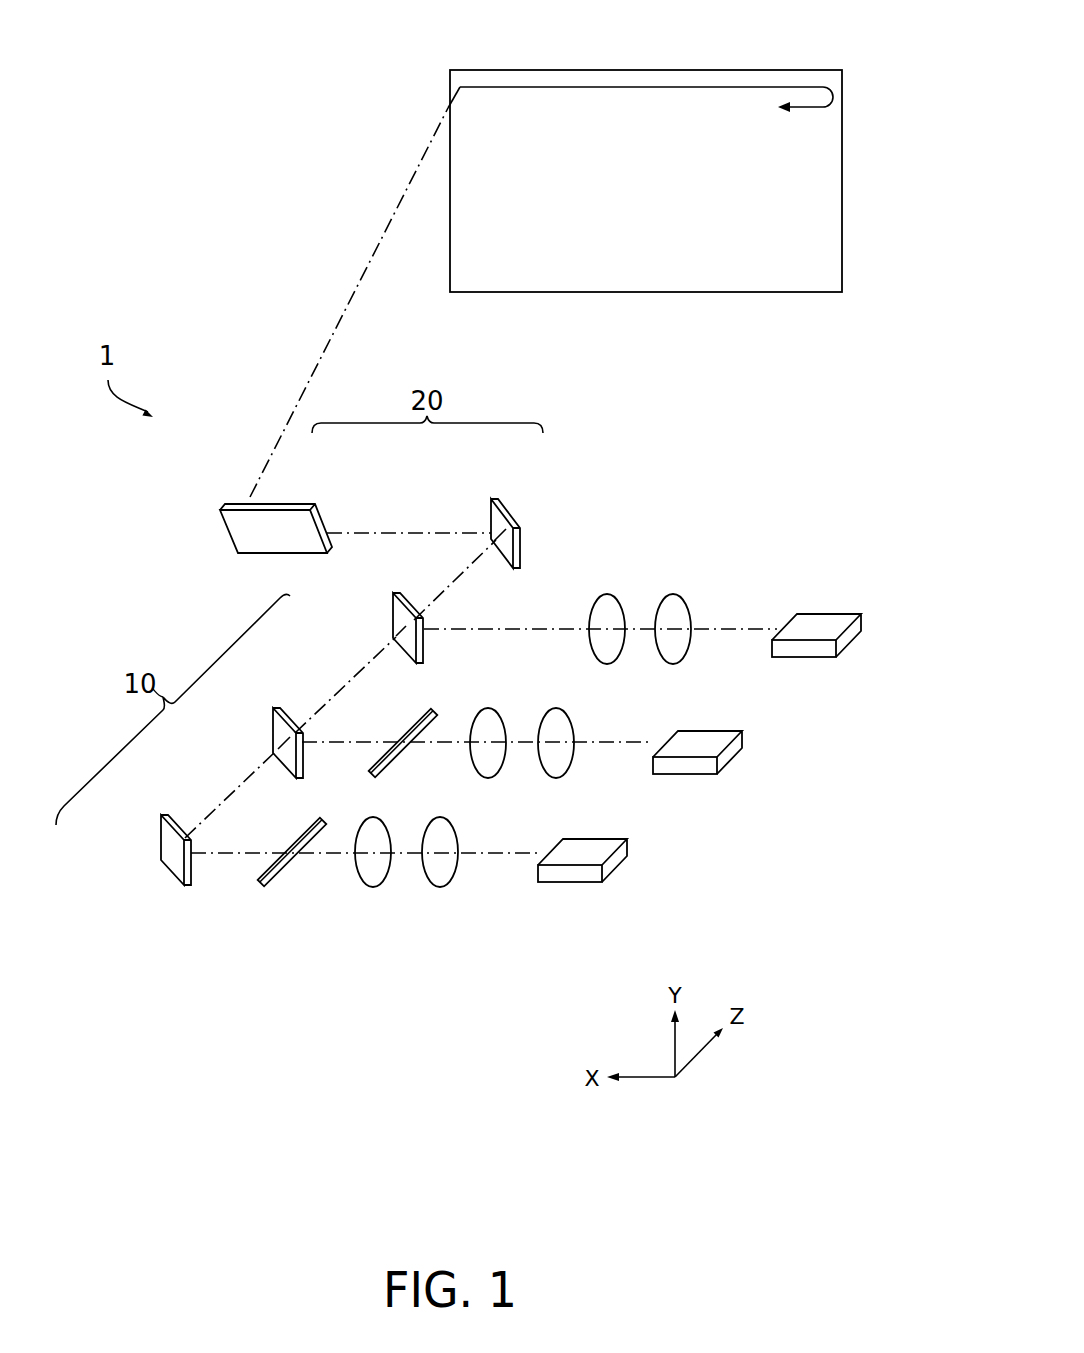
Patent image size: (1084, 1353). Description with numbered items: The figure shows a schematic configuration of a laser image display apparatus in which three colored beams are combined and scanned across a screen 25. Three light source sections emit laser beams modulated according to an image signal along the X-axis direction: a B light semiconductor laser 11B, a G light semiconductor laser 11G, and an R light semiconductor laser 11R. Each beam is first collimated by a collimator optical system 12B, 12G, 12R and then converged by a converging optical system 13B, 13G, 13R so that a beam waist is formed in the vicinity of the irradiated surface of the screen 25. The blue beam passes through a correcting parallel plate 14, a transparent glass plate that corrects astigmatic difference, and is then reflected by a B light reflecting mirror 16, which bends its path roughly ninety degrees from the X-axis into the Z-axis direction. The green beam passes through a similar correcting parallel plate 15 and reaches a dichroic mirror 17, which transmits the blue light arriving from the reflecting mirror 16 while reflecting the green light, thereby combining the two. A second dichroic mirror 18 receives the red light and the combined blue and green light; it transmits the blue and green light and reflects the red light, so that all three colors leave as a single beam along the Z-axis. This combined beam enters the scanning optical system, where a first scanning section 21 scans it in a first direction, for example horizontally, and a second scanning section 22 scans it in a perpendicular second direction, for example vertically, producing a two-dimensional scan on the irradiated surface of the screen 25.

The R light semiconductor laser 11R is at (822, 618).
The G light semiconductor laser 11G is at (708, 737).
The B light semiconductor laser 11B is at (595, 848).
The collimator optical system 12R is at (673, 595).
The collimator optical system 12G is at (555, 713).
The collimator optical system 12B is at (448, 828).
The converging optical system 13R is at (607, 595).
The converging optical system 13G is at (487, 712).
The converging optical system 13B is at (377, 828).
The correcting parallel plate 14 is at (292, 842).
The correcting parallel plate 15 is at (400, 733).
The B light reflecting mirror 16 is at (161, 839).
The dichroic mirror 17 is at (273, 728).
The dichroic mirror 18 is at (393, 617).
The first scanning section 21 is at (511, 508).
The second scanning section 22 is at (292, 506).
The screen 25 is at (800, 82).